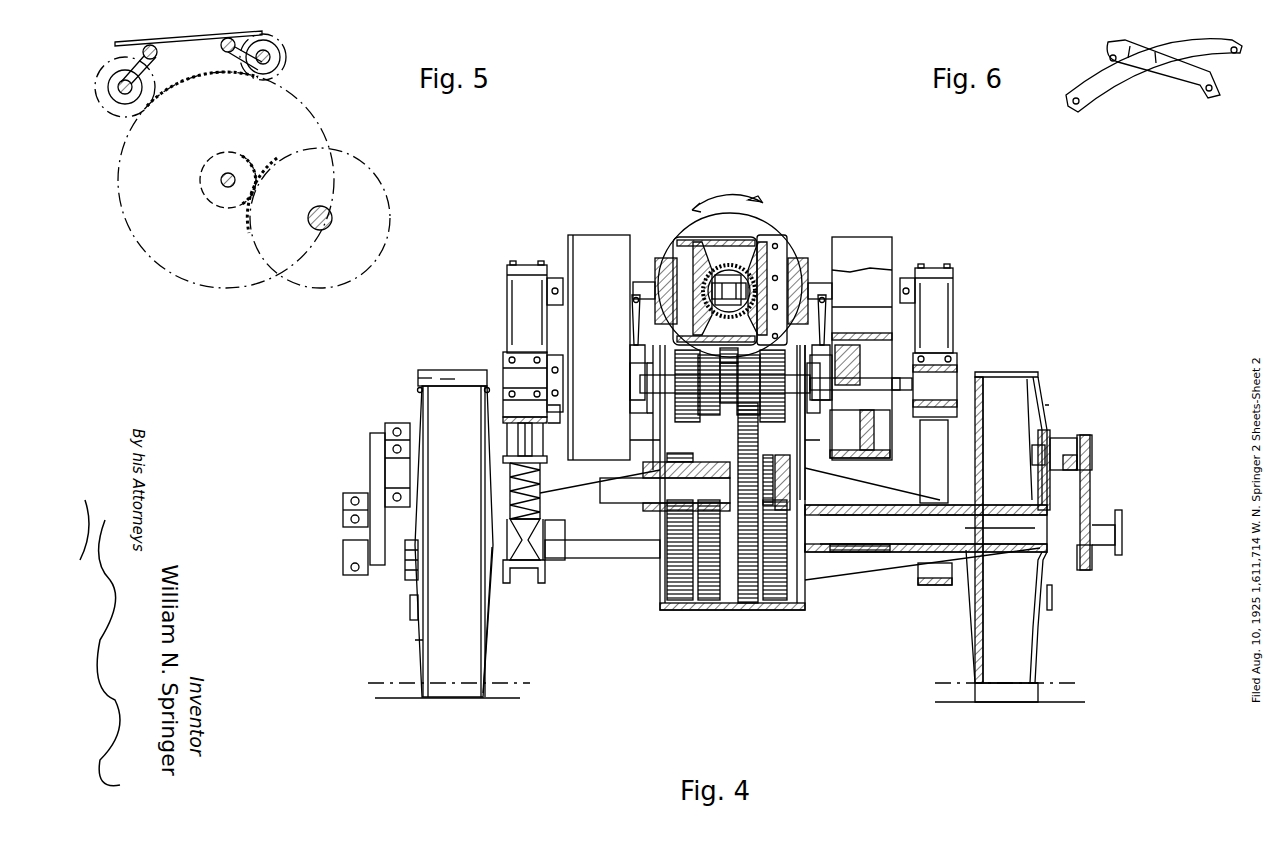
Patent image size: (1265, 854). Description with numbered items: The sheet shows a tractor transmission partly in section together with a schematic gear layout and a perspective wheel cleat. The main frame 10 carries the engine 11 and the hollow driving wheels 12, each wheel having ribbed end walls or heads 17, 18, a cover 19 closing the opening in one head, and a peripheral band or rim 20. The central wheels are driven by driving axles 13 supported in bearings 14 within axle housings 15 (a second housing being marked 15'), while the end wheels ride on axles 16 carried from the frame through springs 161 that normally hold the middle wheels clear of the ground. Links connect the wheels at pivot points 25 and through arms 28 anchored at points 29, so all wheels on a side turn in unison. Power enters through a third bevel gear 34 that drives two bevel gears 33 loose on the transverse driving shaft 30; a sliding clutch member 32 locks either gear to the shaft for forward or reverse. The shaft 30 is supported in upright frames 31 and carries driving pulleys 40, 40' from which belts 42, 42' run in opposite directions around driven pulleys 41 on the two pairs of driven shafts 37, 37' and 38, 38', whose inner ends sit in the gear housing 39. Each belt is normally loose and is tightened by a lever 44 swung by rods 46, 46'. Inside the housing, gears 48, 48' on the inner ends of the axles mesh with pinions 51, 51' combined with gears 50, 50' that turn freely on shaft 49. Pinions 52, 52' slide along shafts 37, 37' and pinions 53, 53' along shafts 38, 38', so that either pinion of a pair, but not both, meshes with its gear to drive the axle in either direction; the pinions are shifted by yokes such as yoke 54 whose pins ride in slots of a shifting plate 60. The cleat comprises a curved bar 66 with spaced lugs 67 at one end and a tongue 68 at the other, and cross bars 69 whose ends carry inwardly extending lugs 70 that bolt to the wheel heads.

In FIG. 4, the main frame 10 is at (540, 438).
In FIG. 4, the engine 11 is at (700, 218).
In FIG. 4, the driving wheels 12 is at (465, 372).
In FIG. 5, the driving axles 13 is at (332, 217).
In FIG. 4, the driving axles 13 is at (882, 556).
In FIG. 4, the bearings 14 is at (938, 500).
In FIG. 4, the axle housings 15 is at (602, 572).
In FIG. 4, the frame bar 15' is at (860, 569).
In FIG. 4, the axles 16 is at (555, 562).
In FIG. 4, the end wall or head 17 is at (488, 640).
In FIG. 4, the end wall or head 18 is at (418, 650).
In FIG. 4, the cover 19 is at (408, 607).
In FIG. 4, the band or rim 20 is at (1012, 372).
In FIG. 4, the pivotal connection 25 is at (1063, 440).
In FIG. 4, the arms 28 is at (372, 455).
In FIG. 4, the points 29 is at (1108, 545).
In FIG. 4, the driving shaft 30 is at (792, 280).
In FIG. 4, the upright frames 31 is at (510, 330).
In FIG. 4, the clutch member 32 is at (752, 258).
In FIG. 4, the bevel gears 33 is at (690, 268).
In FIG. 4, the third bevel gear 34 is at (728, 266).
In FIG. 5, the driven shaft 37 is at (104, 71).
In FIG. 4, the driven shaft 37 is at (813, 356).
In FIG. 5, the driven shaft 37' is at (287, 46).
In FIG. 4, the driven shaft 37' is at (905, 351).
In FIG. 4, the driven shaft 38 is at (631, 388).
In FIG. 4, the driven shaft 38' is at (571, 373).
In FIG. 4, the gear housing 39 is at (812, 292).
In FIG. 4, the driving pulley 40 is at (926, 312).
In FIG. 4, the driving pulley 40' is at (529, 278).
In FIG. 4, the driven pulleys 41 is at (548, 403).
In FIG. 4, the belt 42 is at (862, 334).
In FIG. 4, the belt 42' is at (589, 331).
In FIG. 4, the lever 44 is at (826, 338).
In FIG. 4, the rod 46 is at (840, 316).
In FIG. 4, the rod 46' is at (620, 316).
In FIG. 5, the gear 48 is at (264, 179).
In FIG. 4, the gear 48 is at (732, 491).
In FIG. 4, the gear 48' is at (689, 569).
In FIG. 5, the shaft 49 is at (221, 182).
In FIG. 4, the shaft 49 is at (643, 492).
In FIG. 5, the gear 50 is at (213, 180).
In FIG. 4, the gear 50 is at (772, 398).
In FIG. 4, the gear 50' is at (686, 398).
In FIG. 5, the pinion 51 is at (239, 164).
In FIG. 4, the pinion 51 is at (797, 479).
In FIG. 4, the pinion 51' is at (661, 446).
In FIG. 5, the pinion 52 is at (115, 91).
In FIG. 4, the pinion 52 is at (832, 377).
In FIG. 5, the pinion 52' is at (280, 57).
In FIG. 4, the pinion 52' is at (835, 365).
In FIG. 4, the pinion 53 is at (670, 383).
In FIG. 4, the pinion 53' is at (671, 359).
In FIG. 5, the yoke 54 is at (146, 62).
In FIG. 5, the gear shifting plate 60 is at (191, 40).
In FIG. 6, the bar 66 is at (1130, 85).
In FIG. 4, the bar 66 is at (445, 378).
In FIG. 6, the lugs 67 is at (1236, 55).
In FIG. 6, the tongue 68 is at (1072, 106).
In FIG. 6, the cross bars 69 is at (1185, 85).
In FIG. 4, the cross bars 69 is at (425, 378).
In FIG. 6, the lugs 70 is at (1108, 58).
In FIG. 4, the lugs 70 is at (418, 387).
In FIG. 4, the springs 161 is at (542, 480).